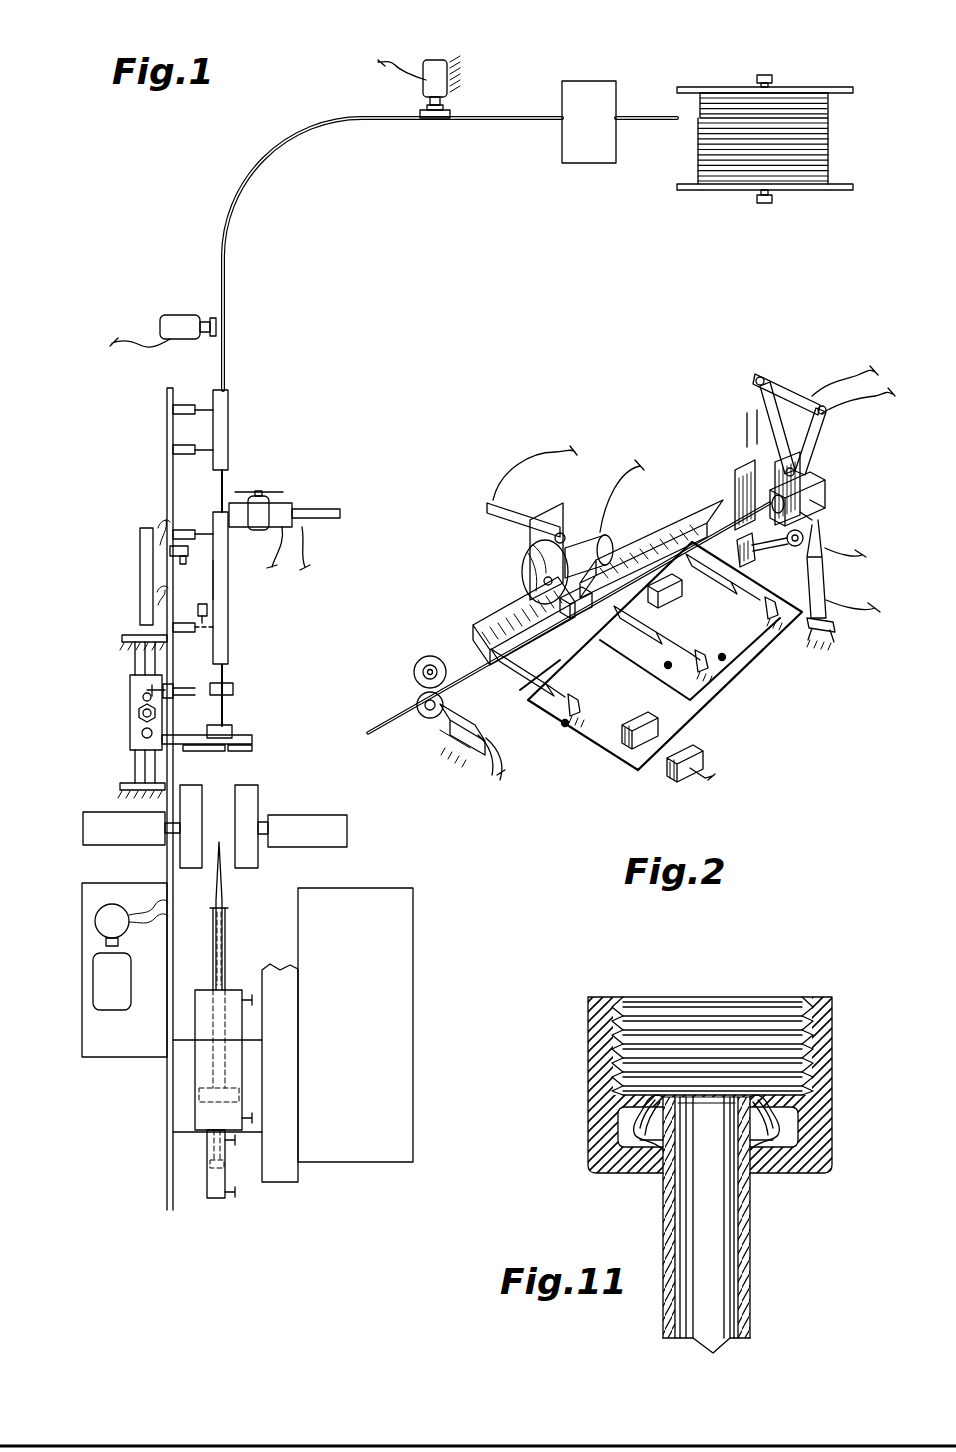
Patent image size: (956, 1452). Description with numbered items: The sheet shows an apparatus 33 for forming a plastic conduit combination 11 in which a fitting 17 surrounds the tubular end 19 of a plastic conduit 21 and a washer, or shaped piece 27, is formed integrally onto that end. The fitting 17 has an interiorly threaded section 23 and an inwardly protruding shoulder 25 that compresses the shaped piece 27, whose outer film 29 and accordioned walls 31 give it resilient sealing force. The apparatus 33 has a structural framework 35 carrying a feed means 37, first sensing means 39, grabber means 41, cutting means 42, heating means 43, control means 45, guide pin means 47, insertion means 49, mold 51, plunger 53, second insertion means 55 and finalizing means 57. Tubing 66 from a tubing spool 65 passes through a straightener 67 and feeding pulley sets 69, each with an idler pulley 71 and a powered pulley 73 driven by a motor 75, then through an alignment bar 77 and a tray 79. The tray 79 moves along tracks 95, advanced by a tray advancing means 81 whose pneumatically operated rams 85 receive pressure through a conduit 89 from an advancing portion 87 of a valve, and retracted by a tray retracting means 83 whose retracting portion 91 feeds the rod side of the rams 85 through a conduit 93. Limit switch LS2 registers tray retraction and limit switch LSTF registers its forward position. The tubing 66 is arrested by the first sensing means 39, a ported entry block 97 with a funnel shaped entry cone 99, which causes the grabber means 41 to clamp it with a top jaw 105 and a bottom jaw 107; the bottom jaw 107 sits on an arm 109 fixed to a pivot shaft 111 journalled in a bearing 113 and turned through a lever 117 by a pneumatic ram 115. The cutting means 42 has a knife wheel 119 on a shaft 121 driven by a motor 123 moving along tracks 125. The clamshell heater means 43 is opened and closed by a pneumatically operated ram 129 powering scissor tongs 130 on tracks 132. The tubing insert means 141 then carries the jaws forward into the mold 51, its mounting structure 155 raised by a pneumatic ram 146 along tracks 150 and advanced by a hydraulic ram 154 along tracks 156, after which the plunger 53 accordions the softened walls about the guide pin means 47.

In FIG. 11, the plastic conduit combination 11 is at (570, 1172).
In FIG. 11, the fitting 17 is at (590, 1024).
In FIG. 11, the tubular end 19 is at (752, 1300).
In FIG. 11, the plastic conduit 21 is at (666, 1298).
In FIG. 11, the interiorly threaded section 23 is at (805, 1030).
In FIG. 11, the shoulder 25 is at (667, 1182).
In FIG. 11, the shaped piece 27 is at (795, 1128).
In FIG. 11, the outer film 29 is at (620, 1118).
In FIG. 11, the accordioned walls 31 is at (648, 1125).
In FIG. 1, the apparatus 33 is at (58, 324).
In FIG. 1, the structural framework 35 is at (62, 847).
In FIG. 1, the feed means 37 is at (240, 316).
In FIG. 2, the feed means 37 is at (437, 622).
In FIG. 1, the first sensing means 39 is at (265, 752).
In FIG. 2, the first sensing means 39 is at (855, 478).
In FIG. 2, the grabber means 41 is at (742, 465).
In FIG. 1, the cutting means 42 is at (238, 478).
In FIG. 2, the cutting means 42 is at (600, 524).
In FIG. 1, the heating means 43 is at (253, 752).
In FIG. 2, the heating means 43 is at (841, 440).
In FIG. 1, the control means 45 is at (388, 904).
In FIG. 1, the guide pin means 47 is at (223, 889).
In FIG. 1, the insertion means 49 is at (147, 1172).
In FIG. 1, the mold 51 is at (252, 802).
In FIG. 1, the plunger 53 is at (228, 940).
In FIG. 1, the second insertion means 55 is at (140, 1106).
In FIG. 1, the finalizing means 57 is at (341, 1168).
In FIG. 1, the tubing spool 65 is at (784, 110).
In FIG. 1, the tubing 66 is at (648, 115).
In FIG. 2, the tubing 66 is at (450, 633).
In FIG. 1, the straightener 67 is at (585, 90).
In FIG. 1, the feeding pulley sets 69 is at (412, 50).
In FIG. 2, the feeding pulley sets 69 is at (446, 762).
In FIG. 2, the idler pulley 71 is at (414, 670).
In FIG. 2, the powered pulley 73 is at (422, 702).
In FIG. 2, the motor 75 is at (470, 728).
In FIG. 1, the alignment bar 77 is at (220, 578).
In FIG. 2, the alignment bar 77 is at (682, 515).
In FIG. 2, the tray 79 is at (712, 515).
In FIG. 2, the tray advancing means 81 is at (665, 776).
In FIG. 2, the tray retracting means 83 is at (606, 760).
In FIG. 2, the pneumatically operated rams 85 is at (767, 580).
In FIG. 2, the advancing portion of valve 87 is at (690, 773).
In FIG. 2, the conduit 89 is at (780, 597).
In FIG. 2, the retracting portion of valve 91 is at (618, 730).
In FIG. 2, the conduit 93 is at (687, 600).
In FIG. 2, the tracks 95 is at (740, 560).
In FIG. 2, the ported entry block 97 is at (830, 500).
In FIG. 2, the funnel shaped entry cone 99 is at (815, 512).
In FIG. 1, the top jaw 105 is at (233, 690).
In FIG. 2, the top jaw 105 is at (734, 482).
In FIG. 2, the bottom jaw 107 is at (763, 630).
In FIG. 2, the arm 109 is at (832, 620).
In FIG. 2, the pivot shaft 111 is at (830, 531).
In FIG. 2, the bearing 113 is at (832, 548).
In FIG. 2, the pneumatic ram 115 is at (834, 590).
In FIG. 2, the lever 117 is at (832, 565).
In FIG. 2, the knife wheel 119 is at (533, 598).
In FIG. 2, the shaft 121 is at (548, 505).
In FIG. 2, the motor 123 is at (590, 545).
In FIG. 2, the tracks 125 is at (585, 530).
In FIG. 2, the pneumatically operated ram 129 is at (790, 378).
In FIG. 2, the scissor tongs 130 is at (775, 440).
In FIG. 2, the tracks 132 is at (800, 462).
In FIG. 1, the tubing insert means 141 is at (120, 646).
In FIG. 1, the pneumatic ram 146 is at (140, 722).
In FIG. 1, the tracks 150 is at (140, 688).
In FIG. 1, the hydraulic ram 154 is at (140, 576).
In FIG. 1, the mounting structure 155 is at (130, 710).
In FIG. 1, the tracks 156 is at (135, 760).
In FIG. 1, the limit switch LS2 is at (178, 558).
In FIG. 2, the limit switch LS2 is at (660, 655).
In FIG. 1, the limit switch LSTF is at (207, 610).
In FIG. 2, the limit switch LSTF is at (690, 520).